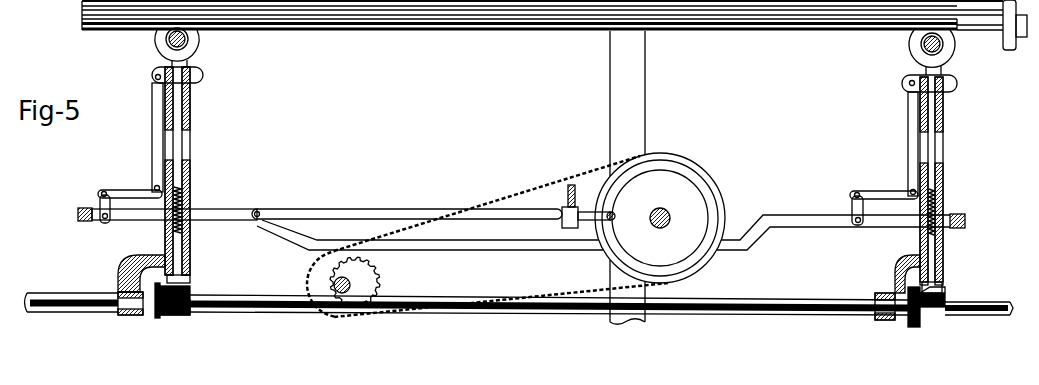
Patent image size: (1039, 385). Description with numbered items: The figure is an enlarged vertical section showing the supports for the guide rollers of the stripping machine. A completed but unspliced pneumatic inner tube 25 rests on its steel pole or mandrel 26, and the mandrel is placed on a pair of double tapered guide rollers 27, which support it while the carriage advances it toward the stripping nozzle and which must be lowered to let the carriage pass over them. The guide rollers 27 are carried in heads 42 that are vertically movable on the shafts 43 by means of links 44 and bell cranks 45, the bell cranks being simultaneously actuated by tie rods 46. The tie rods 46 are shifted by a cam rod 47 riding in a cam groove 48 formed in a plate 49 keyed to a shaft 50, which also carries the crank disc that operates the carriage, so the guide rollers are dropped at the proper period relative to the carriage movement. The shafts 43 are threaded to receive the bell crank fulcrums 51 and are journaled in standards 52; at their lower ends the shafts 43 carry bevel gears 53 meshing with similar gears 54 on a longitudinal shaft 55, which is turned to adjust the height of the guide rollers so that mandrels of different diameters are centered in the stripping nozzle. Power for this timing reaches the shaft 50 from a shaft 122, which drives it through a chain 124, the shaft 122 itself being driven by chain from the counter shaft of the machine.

The pneumatic inner tube 25 is at (703, 31).
The mandrel 26 is at (1003, 36).
The double tapered guide rollers 27 is at (195, 43).
The heads 42 is at (190, 105).
The shafts 43 is at (190, 143).
The links 44 is at (152, 120).
The bell cranks 45 is at (146, 190).
The tie rods 46 is at (214, 212).
The cam rod 47 is at (432, 209).
The cam groove 48 is at (700, 180).
The plate 49 is at (672, 175).
The shaft 50 is at (670, 216).
The bell crank fulcrums 51 is at (115, 192).
The standards 52 is at (138, 257).
The bevel gears 53 is at (185, 286).
The bevel gears 54 is at (165, 312).
The longitudinal shaft 55 is at (255, 293).
The shaft 122 is at (350, 284).
The chain 124 is at (518, 195).